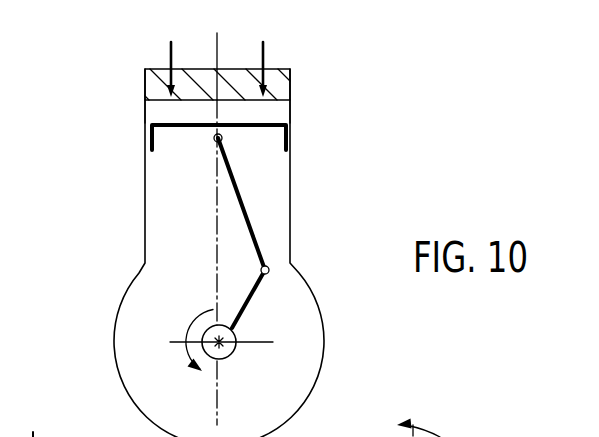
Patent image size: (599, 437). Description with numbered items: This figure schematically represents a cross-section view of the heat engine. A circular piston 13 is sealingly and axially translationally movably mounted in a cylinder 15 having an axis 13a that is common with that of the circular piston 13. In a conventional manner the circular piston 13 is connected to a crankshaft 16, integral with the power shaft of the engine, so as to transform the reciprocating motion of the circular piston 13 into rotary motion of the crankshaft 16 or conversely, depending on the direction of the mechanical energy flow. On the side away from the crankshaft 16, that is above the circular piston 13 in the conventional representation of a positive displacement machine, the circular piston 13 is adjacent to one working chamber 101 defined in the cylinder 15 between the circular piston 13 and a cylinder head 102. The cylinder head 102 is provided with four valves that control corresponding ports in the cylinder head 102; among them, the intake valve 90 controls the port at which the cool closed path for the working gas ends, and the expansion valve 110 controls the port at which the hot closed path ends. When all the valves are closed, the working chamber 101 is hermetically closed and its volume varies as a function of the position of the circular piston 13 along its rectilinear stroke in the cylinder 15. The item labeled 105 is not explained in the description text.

The circular piston 13 is at (168, 139).
The axis 13a is at (229, 39).
The cylinder 15 is at (298, 194).
The crankshaft 16 is at (246, 333).
The intake valve 90 is at (160, 45).
The working chamber 101 is at (278, 109).
The cylinder head 102 is at (138, 86).
The gas flow arrow 105 is at (497, 433).
The expansion valve 110 is at (276, 47).